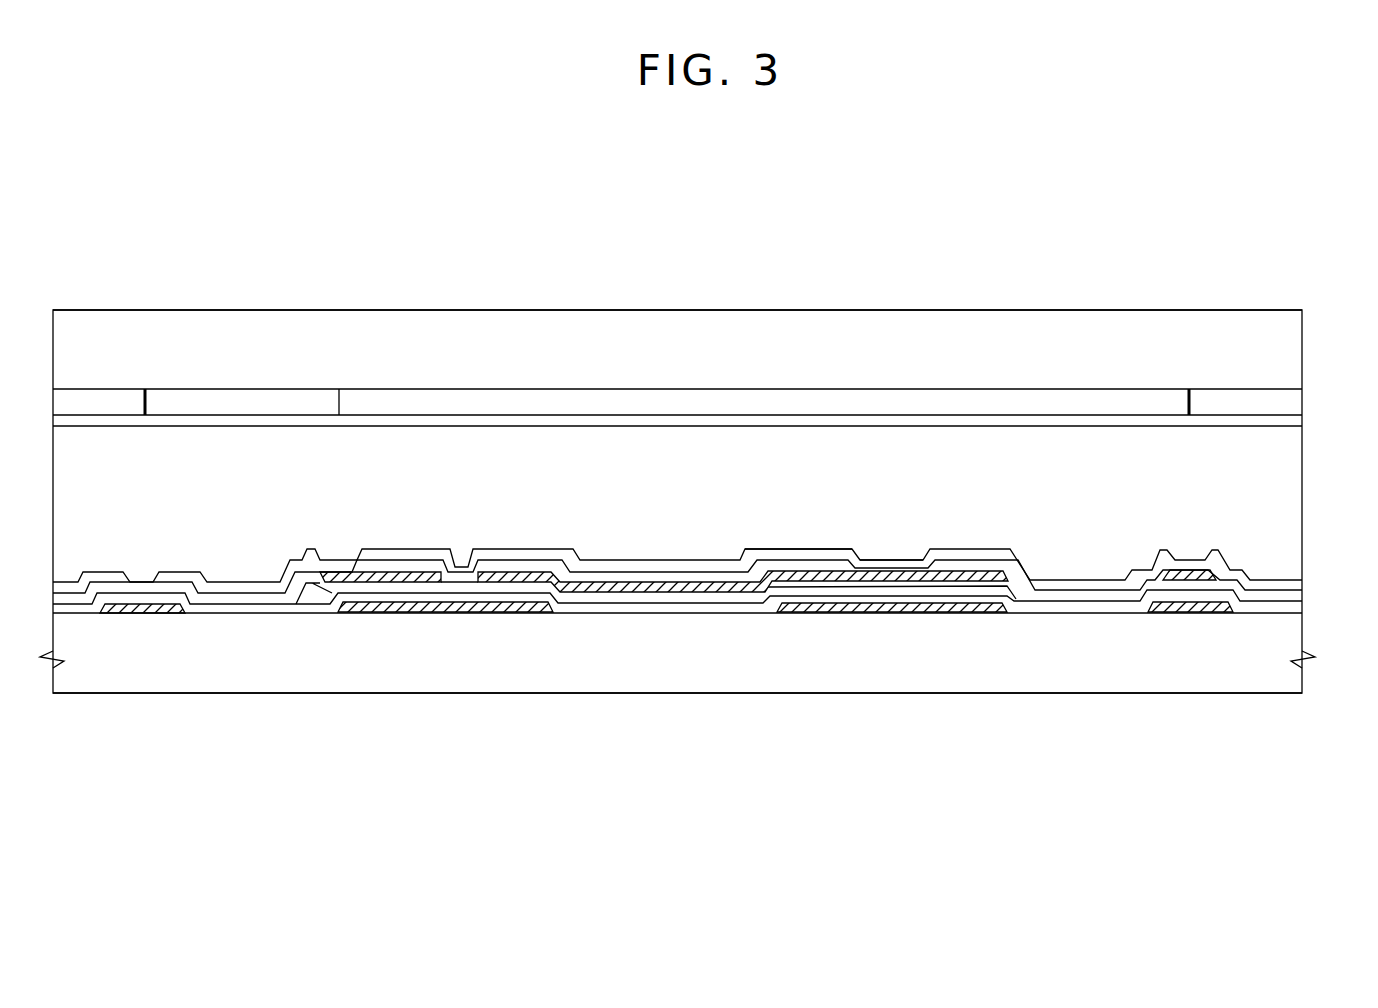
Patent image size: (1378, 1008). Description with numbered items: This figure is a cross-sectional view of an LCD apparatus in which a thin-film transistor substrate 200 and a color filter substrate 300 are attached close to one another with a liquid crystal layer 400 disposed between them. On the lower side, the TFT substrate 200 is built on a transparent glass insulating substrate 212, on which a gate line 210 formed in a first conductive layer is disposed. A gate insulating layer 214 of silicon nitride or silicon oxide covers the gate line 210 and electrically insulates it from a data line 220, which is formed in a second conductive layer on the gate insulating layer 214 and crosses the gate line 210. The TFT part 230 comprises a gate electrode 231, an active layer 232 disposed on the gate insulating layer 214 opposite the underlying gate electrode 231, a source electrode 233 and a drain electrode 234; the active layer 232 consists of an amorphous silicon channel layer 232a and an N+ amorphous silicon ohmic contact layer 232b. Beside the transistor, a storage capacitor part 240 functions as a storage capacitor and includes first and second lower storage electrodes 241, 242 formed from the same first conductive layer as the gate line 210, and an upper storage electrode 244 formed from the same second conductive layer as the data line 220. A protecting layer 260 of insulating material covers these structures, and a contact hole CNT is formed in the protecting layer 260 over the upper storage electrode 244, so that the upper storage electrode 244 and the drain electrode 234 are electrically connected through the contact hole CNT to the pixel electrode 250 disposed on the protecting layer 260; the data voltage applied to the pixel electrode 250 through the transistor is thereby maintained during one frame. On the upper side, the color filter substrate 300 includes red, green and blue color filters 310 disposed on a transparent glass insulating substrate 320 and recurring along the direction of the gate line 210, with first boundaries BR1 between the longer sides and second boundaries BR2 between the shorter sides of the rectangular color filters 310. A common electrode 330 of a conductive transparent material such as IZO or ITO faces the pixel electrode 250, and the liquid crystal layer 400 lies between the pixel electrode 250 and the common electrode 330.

The color filter substrate 300 is at (715, 343).
The color filters 310 is at (972, 398).
The insulating substrate 320 is at (1091, 322).
The common electrode 330 is at (890, 420).
The first boundaries BR1 is at (1189, 383).
The second boundaries BR2 is at (145, 383).
The liquid crystal layer 400 is at (1288, 504).
The thin-film transistor substrate 200 is at (715, 628).
The insulating substrate 212 is at (1103, 672).
The gate insulating layer 214 is at (1050, 607).
The gate line 210 is at (134, 610).
The data line 220 is at (1188, 574).
The second lower storage electrode 242 is at (1162, 606).
The first lower storage electrode 241 is at (880, 606).
The upper storage electrode 244 is at (968, 574).
The TFT part 230 is at (631, 628).
The gate electrode 231 is at (447, 608).
The active layer 232 is at (358, 757).
The channel layer 232a is at (350, 586).
The ohmic contact layer 232b is at (394, 590).
The source electrode 233 is at (303, 592).
The drain electrode 234 is at (492, 578).
The pixel electrode 250 is at (621, 568).
The protecting layer 260 is at (692, 576).
The storage capacitor part 240 is at (823, 540).
The contact hole CNT is at (900, 550).